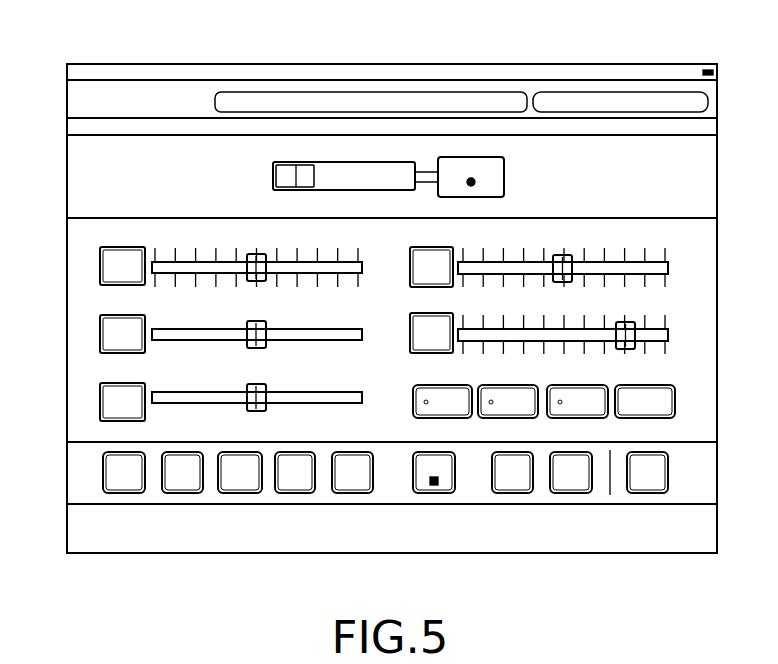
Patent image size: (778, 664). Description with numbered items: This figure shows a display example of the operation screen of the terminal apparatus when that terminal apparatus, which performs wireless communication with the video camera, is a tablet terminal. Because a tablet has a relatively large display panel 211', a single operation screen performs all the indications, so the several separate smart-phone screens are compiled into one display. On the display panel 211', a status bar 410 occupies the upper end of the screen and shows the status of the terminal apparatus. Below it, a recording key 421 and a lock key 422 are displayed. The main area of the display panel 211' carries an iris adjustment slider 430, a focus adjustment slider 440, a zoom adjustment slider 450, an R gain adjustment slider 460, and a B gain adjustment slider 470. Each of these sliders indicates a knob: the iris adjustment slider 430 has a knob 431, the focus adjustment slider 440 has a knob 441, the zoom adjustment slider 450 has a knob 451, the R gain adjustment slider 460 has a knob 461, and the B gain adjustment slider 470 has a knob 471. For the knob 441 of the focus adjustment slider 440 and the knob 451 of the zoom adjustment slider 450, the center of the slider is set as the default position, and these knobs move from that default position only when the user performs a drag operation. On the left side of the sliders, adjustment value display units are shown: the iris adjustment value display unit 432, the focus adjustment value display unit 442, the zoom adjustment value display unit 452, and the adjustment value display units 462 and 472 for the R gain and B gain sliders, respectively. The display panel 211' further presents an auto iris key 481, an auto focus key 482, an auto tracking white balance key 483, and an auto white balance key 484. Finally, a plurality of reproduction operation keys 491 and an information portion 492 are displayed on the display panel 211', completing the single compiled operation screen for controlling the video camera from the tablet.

The display panel 211' is at (388, 291).
The status bar 410 is at (712, 64).
The recording key 421 is at (506, 175).
The lock key 422 is at (273, 178).
The iris adjustment slider 430 is at (217, 257).
The knob 431 is at (258, 256).
The iris adjustment value display unit 432 is at (100, 268).
The focus adjustment slider 440 is at (217, 324).
The knob 441 is at (258, 323).
The focus adjustment value display unit 442 is at (100, 336).
The zoom adjustment slider 450 is at (217, 387).
The knob 451 is at (258, 386).
The zoom adjustment value display unit 452 is at (100, 404).
The R gain adjustment slider 460 is at (625, 250).
The knob 461 is at (563, 256).
The adjustment value display unit 462 is at (452, 248).
The B gain adjustment slider 470 is at (645, 317).
The knob 471 is at (624, 323).
The adjustment value display unit 472 is at (452, 314).
The auto iris key 481 is at (467, 385).
The auto focus key 482 is at (537, 385).
The auto tracking white balance key 483 is at (587, 418).
The auto white balance key 484 is at (675, 402).
The reproduction operation keys 491 is at (240, 452).
The information portion 492 is at (717, 526).